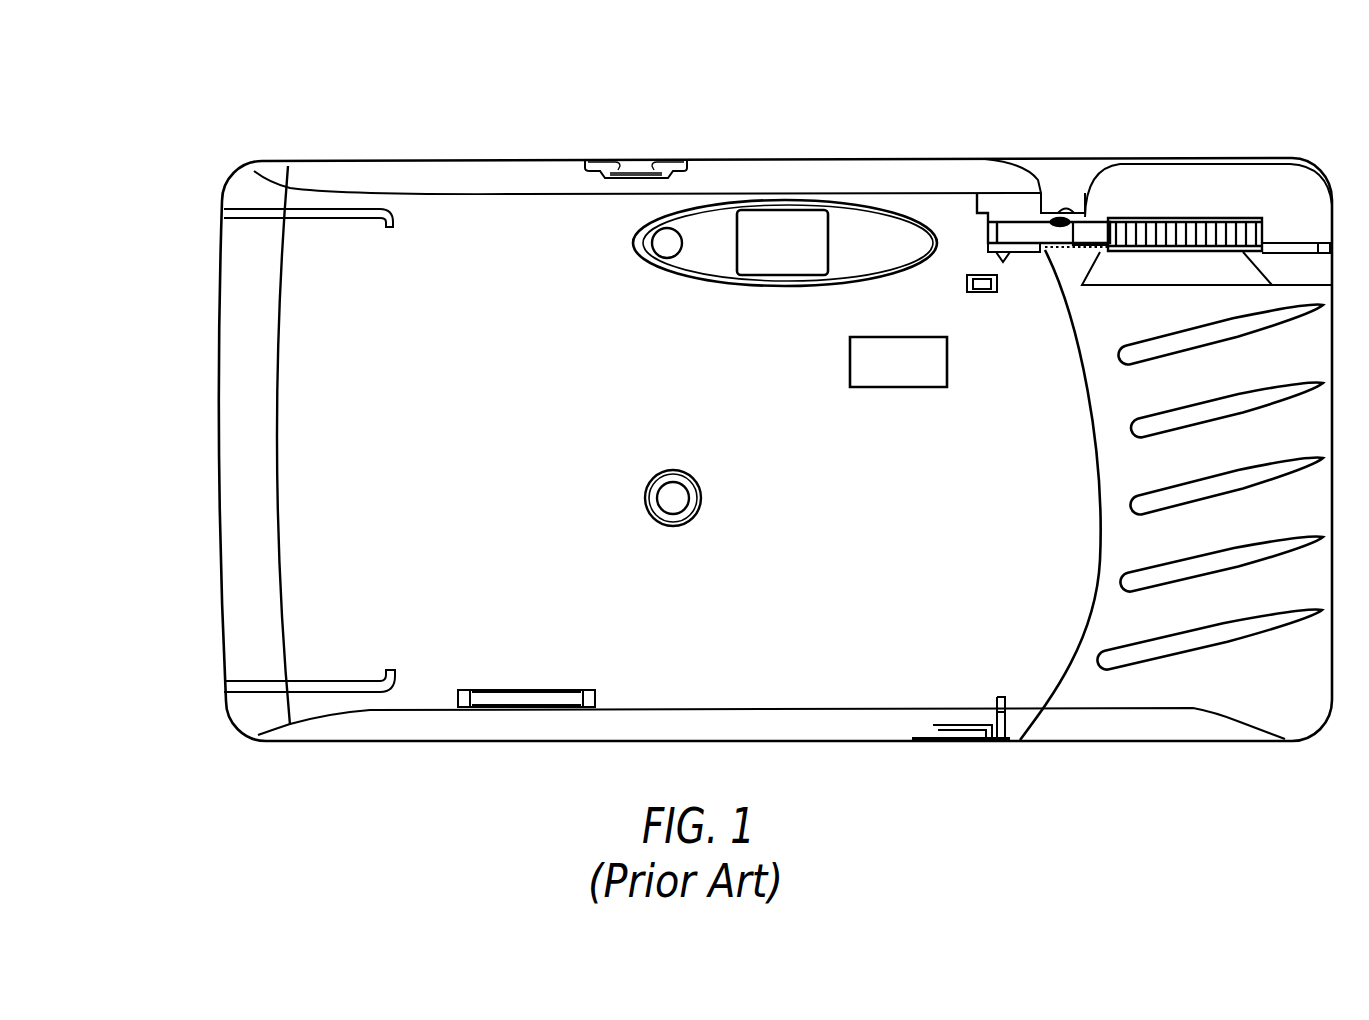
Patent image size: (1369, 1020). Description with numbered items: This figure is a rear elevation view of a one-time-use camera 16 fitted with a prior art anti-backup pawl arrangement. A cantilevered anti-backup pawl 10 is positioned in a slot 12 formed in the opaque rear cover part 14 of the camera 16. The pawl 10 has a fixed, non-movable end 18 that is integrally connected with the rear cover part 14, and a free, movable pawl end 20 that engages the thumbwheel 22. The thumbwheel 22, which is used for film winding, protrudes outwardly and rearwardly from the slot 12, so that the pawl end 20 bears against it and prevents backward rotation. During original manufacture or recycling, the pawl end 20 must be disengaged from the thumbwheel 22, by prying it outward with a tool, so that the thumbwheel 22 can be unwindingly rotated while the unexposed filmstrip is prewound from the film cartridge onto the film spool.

The anti-backup pawl 10 is at (1017, 222).
The slot 12 is at (977, 196).
The rear cover part 14 is at (295, 452).
The one-time-use camera 16 is at (321, 153).
The fixed end 18 is at (990, 232).
The pawl end 20 is at (1098, 232).
The thumbwheel 22 is at (1192, 220).